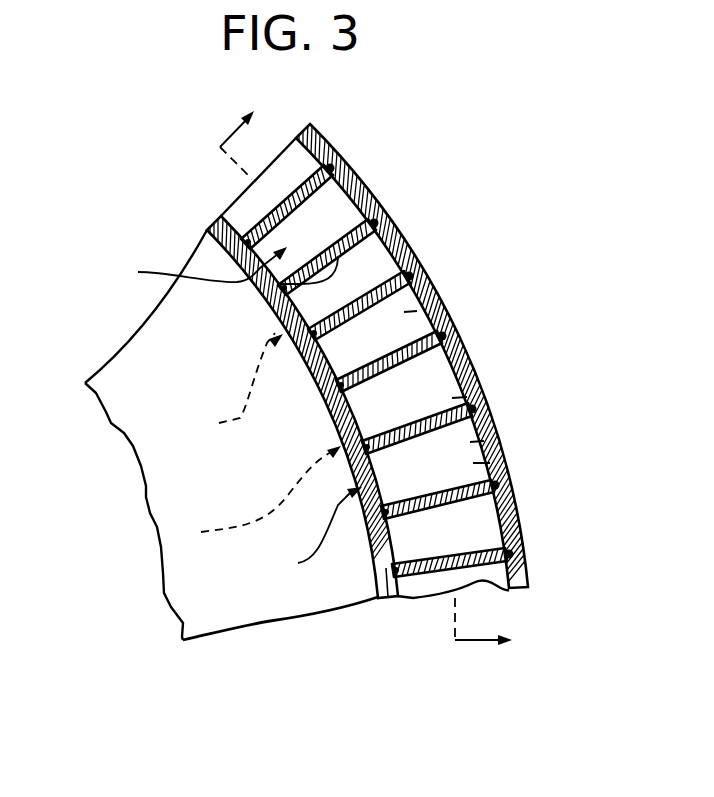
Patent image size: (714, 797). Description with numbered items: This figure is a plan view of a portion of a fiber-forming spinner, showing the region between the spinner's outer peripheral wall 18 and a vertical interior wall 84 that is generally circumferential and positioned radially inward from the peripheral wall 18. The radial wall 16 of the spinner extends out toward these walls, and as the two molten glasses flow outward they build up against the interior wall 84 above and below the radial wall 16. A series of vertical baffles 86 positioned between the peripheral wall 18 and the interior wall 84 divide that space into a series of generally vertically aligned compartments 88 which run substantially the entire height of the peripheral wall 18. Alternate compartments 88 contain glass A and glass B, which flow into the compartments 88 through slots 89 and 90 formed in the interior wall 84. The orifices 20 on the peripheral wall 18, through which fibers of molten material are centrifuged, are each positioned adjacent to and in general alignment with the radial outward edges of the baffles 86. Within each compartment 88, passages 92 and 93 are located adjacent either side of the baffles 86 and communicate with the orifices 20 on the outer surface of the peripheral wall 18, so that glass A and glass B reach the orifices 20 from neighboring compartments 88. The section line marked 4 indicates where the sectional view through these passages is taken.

The section line 4- 4 is at (363, 393).
The radial wall 16 is at (225, 474).
The outer peripheral wall 18 is at (378, 188).
The orifices 20 is at (340, 166).
The vertical interior wall 84 is at (207, 228).
The vertical baffles 86 is at (275, 214).
The compartments 88 is at (471, 378).
The slots 89 is at (251, 440).
The slots 90 is at (232, 413).
The passages 92 is at (436, 340).
The passages 93 is at (437, 353).
The glass A is at (400, 237).
The glass B is at (441, 302).